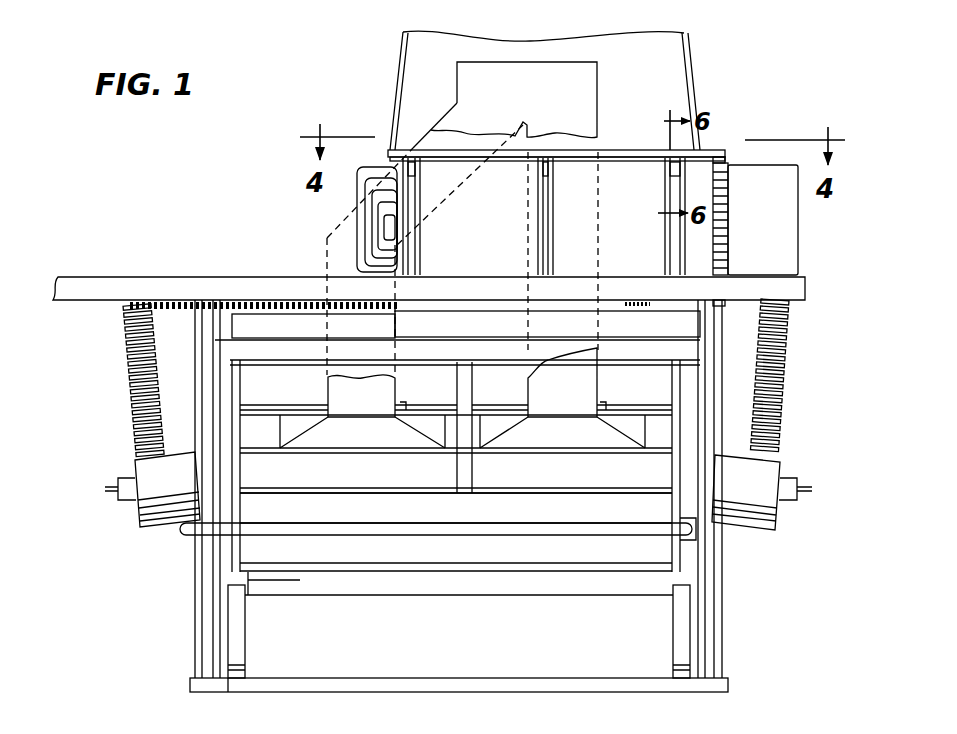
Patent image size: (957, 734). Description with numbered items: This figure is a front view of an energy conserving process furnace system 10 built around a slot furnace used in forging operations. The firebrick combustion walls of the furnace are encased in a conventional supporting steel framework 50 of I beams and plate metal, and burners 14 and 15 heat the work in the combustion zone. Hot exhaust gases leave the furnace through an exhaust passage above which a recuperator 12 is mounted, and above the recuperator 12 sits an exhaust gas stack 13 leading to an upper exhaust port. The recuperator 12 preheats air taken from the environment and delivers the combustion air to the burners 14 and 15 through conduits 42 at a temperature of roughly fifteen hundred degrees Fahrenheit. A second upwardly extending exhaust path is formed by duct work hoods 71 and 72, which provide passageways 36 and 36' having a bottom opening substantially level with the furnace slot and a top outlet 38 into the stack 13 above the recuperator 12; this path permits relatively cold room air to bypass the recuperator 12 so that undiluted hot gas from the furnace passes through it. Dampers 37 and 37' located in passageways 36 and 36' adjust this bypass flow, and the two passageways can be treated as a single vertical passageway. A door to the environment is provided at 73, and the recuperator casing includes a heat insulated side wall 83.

The energy conserving process furnace system 10 is at (738, 102).
The recuperator 12 is at (355, 203).
The exhaust gas stack 13 is at (663, 62).
The burner 14 is at (140, 523).
The burner 15 is at (778, 523).
The passageway 36 is at (562, 382).
The passageway 36' is at (361, 396).
The damper 37 is at (617, 390).
The damper 37' is at (418, 390).
The outlet 38 is at (523, 98).
The conduit 42 is at (128, 332).
The supporting steel framework 50 is at (210, 578).
The hood 71 is at (554, 451).
The hood 72 is at (336, 451).
The door 73 is at (564, 518).
The side wall 83 is at (626, 216).